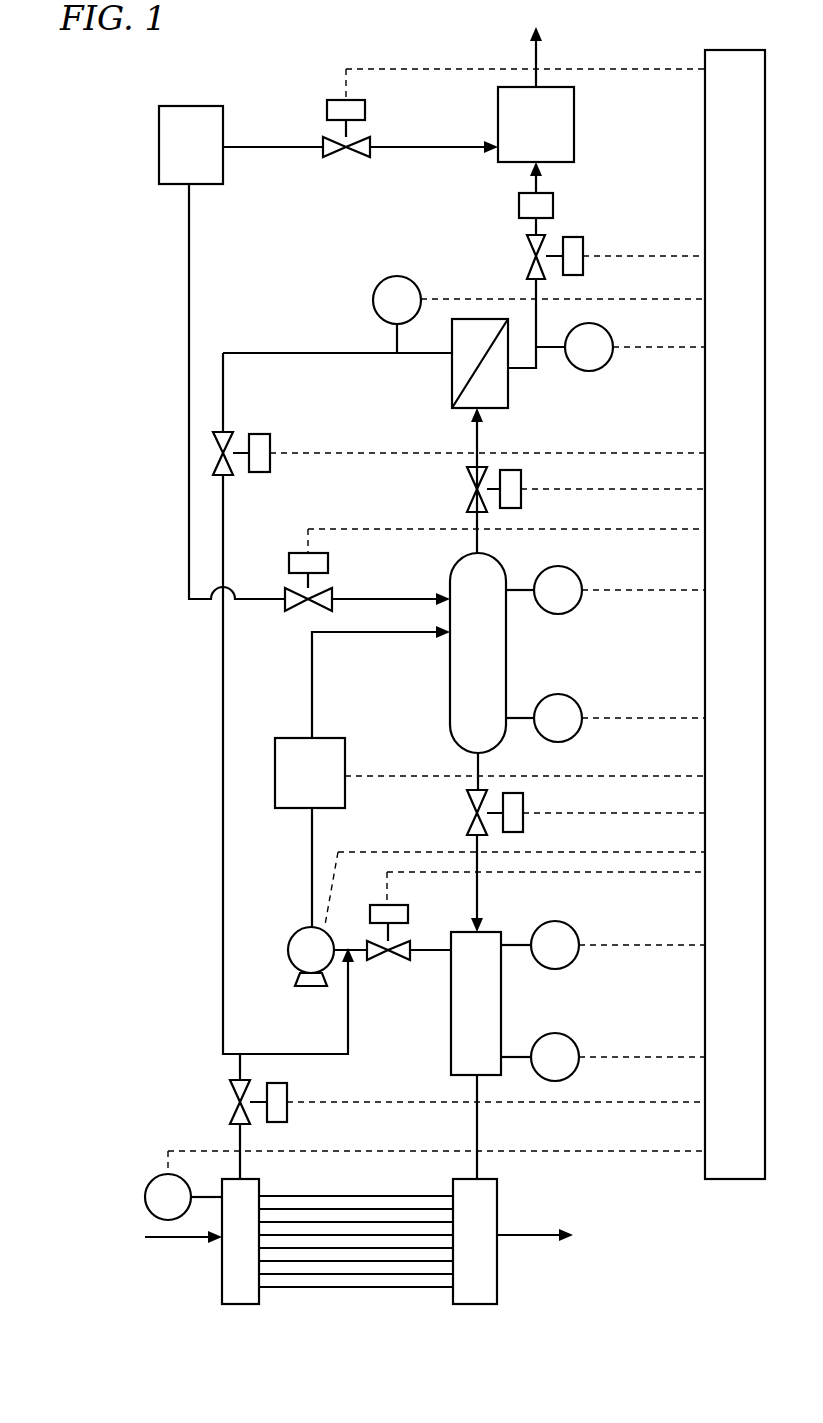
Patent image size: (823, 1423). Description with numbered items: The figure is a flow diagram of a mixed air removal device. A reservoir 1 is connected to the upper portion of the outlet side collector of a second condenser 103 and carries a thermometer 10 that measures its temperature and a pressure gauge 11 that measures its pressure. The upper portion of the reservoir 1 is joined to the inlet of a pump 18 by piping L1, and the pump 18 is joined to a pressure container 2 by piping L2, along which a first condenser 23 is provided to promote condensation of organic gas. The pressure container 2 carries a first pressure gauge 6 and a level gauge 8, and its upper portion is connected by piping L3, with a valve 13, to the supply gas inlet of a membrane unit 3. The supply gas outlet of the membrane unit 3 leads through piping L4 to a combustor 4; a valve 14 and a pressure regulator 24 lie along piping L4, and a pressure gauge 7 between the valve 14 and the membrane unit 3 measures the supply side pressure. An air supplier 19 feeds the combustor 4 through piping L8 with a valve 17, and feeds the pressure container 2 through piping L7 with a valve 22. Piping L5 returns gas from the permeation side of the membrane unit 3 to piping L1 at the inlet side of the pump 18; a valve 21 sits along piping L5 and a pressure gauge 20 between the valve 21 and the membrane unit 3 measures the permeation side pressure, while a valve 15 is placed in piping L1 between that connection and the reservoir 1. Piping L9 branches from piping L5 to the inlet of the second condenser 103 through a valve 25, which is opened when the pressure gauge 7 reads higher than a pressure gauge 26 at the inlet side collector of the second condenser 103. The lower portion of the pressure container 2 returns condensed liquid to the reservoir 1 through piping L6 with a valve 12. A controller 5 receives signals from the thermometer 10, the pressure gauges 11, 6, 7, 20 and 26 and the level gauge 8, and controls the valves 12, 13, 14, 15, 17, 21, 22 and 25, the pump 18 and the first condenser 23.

The reservoir 1 is at (451, 1044).
The pressure container 2 is at (450, 697).
The membrane unit 3 is at (508, 403).
The combustor 4 is at (574, 133).
The controller 5 is at (717, 1180).
The first pressure gauge 6 is at (580, 603).
The pressure gauge 7 is at (607, 365).
The level gauge 8 is at (580, 731).
The thermometer 10 is at (540, 1040).
The pressure gauge 11 is at (563, 970).
The valve 12 is at (523, 824).
The valve 13 is at (521, 500).
The valve 14 is at (583, 262).
The valve 15 is at (408, 912).
The valve 17 is at (365, 110).
The pump 18 is at (300, 928).
The air supplier 19 is at (210, 106).
The pressure gauge 20 is at (380, 280).
The valve 21 is at (270, 463).
The valve 22 is at (328, 563).
The first condenser 23 is at (328, 738).
The pressure regulator 24 is at (553, 207).
The valve 25 is at (287, 1093).
The pressure gauge 26 is at (160, 1177).
The second condenser 103 is at (125, 1177).
The piping L1 is at (430, 952).
The piping L2 is at (312, 840).
The piping L3 is at (478, 540).
The piping L4 is at (536, 368).
The piping L5 is at (223, 774).
The piping L6 is at (477, 912).
The piping L7 is at (189, 230).
The piping L8 is at (405, 148).
The piping L9 is at (240, 1068).